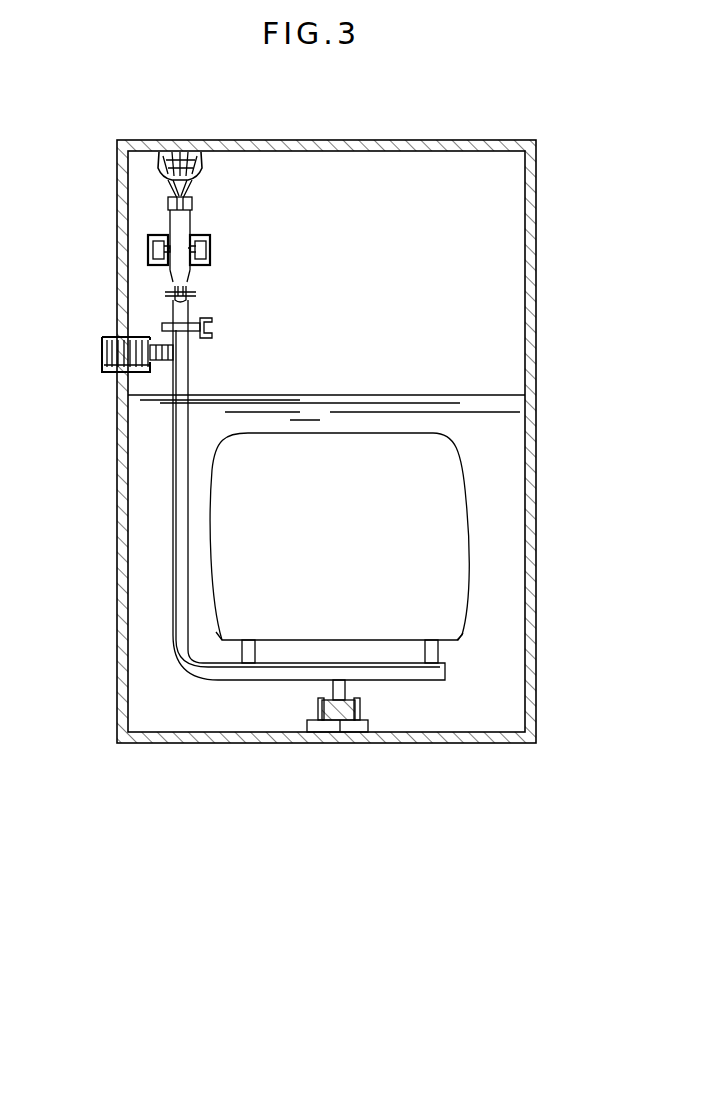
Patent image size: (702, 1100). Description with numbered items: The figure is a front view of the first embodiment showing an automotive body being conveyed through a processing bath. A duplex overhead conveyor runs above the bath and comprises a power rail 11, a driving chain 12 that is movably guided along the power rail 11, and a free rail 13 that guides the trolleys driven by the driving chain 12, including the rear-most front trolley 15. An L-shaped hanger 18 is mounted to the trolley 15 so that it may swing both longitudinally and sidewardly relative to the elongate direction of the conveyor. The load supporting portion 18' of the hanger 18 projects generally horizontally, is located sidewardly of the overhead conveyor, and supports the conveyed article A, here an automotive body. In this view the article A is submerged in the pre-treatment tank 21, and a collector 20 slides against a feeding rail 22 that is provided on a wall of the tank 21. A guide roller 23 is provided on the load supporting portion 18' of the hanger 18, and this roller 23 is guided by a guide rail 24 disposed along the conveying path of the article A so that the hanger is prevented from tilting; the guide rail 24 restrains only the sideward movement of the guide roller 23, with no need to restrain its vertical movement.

The power rail 11 is at (178, 150).
The driving chain 12 is at (194, 206).
The free rail 13 is at (211, 250).
The rear-most front trolley 15 is at (190, 284).
The L-shaped hanger 18 is at (117, 475).
The load supporting portion 18' is at (305, 678).
The collector 20 is at (170, 357).
The pre-treatment tank 21 is at (529, 357).
The feeding rail 22 is at (150, 342).
The guide roller 23 is at (352, 700).
The guide rail 24 is at (318, 708).
The conveyed article A is at (460, 515).